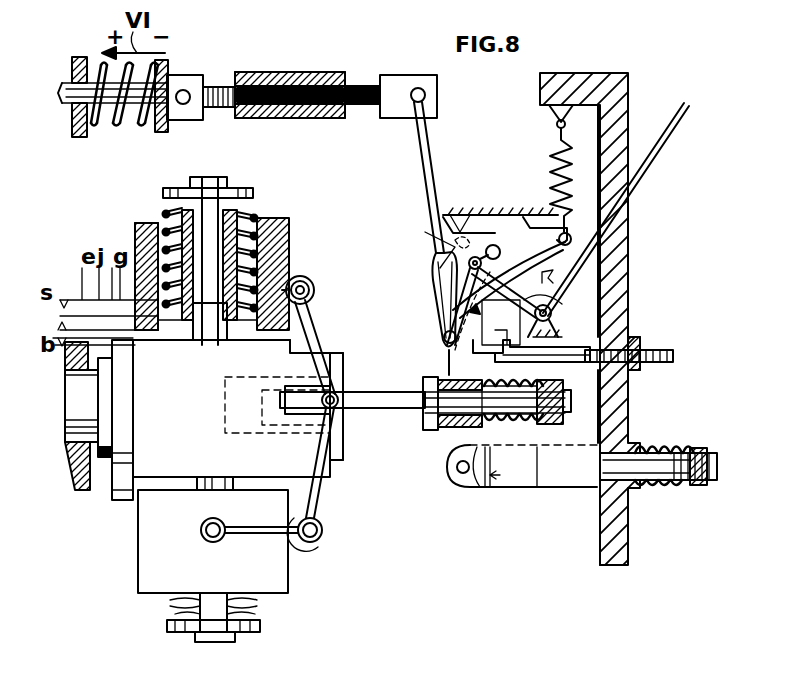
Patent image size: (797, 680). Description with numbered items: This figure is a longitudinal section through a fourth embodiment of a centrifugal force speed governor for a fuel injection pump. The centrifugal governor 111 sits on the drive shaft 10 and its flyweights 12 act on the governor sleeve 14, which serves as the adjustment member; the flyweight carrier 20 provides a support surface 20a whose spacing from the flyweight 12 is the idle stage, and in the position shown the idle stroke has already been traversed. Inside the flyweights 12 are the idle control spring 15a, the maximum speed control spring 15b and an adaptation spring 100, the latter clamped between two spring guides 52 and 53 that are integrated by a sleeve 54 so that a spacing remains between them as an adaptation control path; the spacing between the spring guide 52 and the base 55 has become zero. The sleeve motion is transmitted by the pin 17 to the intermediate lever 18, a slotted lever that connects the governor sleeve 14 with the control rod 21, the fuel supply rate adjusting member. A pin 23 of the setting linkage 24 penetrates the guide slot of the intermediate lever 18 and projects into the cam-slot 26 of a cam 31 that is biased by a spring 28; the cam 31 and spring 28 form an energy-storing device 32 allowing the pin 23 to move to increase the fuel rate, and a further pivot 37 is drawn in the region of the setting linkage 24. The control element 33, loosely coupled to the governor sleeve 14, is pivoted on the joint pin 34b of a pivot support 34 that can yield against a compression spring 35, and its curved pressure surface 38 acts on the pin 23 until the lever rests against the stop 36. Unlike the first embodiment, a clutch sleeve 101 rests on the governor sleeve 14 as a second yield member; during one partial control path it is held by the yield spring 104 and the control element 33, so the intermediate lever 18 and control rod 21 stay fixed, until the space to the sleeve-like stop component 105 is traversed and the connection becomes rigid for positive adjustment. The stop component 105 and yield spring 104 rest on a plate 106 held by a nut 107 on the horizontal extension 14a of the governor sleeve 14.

The drive shaft 10 is at (72, 395).
The flyweights 12 is at (136, 247).
The governor sleeve 14 is at (375, 410).
The horizontal extension 14a is at (570, 384).
The idle control spring 15a is at (242, 212).
The maximum speed control spring 15b is at (240, 236).
The pin 17 is at (432, 432).
The intermediate lever 18 is at (412, 142).
The flyweight carrier 20 is at (292, 338).
The support surface 20a is at (292, 340).
The control rod 21 is at (128, 100).
The pin 23 is at (444, 336).
The setting linkage 24 is at (564, 304).
The cam-slot 26 is at (476, 256).
The spring 28 is at (556, 150).
The cam 31 is at (543, 255).
The energy-storing device 32 is at (493, 232).
The control element 33 is at (452, 433).
The pivot support 34 is at (492, 478).
The joint pin 34b is at (463, 485).
The compression spring 35 is at (656, 490).
The stop 36 is at (480, 352).
The pivot pin 37 is at (554, 318).
The curved pressure surface 38 is at (452, 285).
The spring guide 52 is at (302, 276).
The spring guide 53 is at (272, 262).
The sleeve 54 is at (195, 196).
The base 55 is at (186, 335).
The adaptation spring 100 is at (245, 248).
The clutch sleeve 101 is at (458, 474).
The yield spring 104 is at (537, 428).
The stop component 105 is at (520, 428).
The plate 106 is at (571, 408).
The nut 107 is at (563, 397).
The centrifugal governor 111 is at (147, 226).